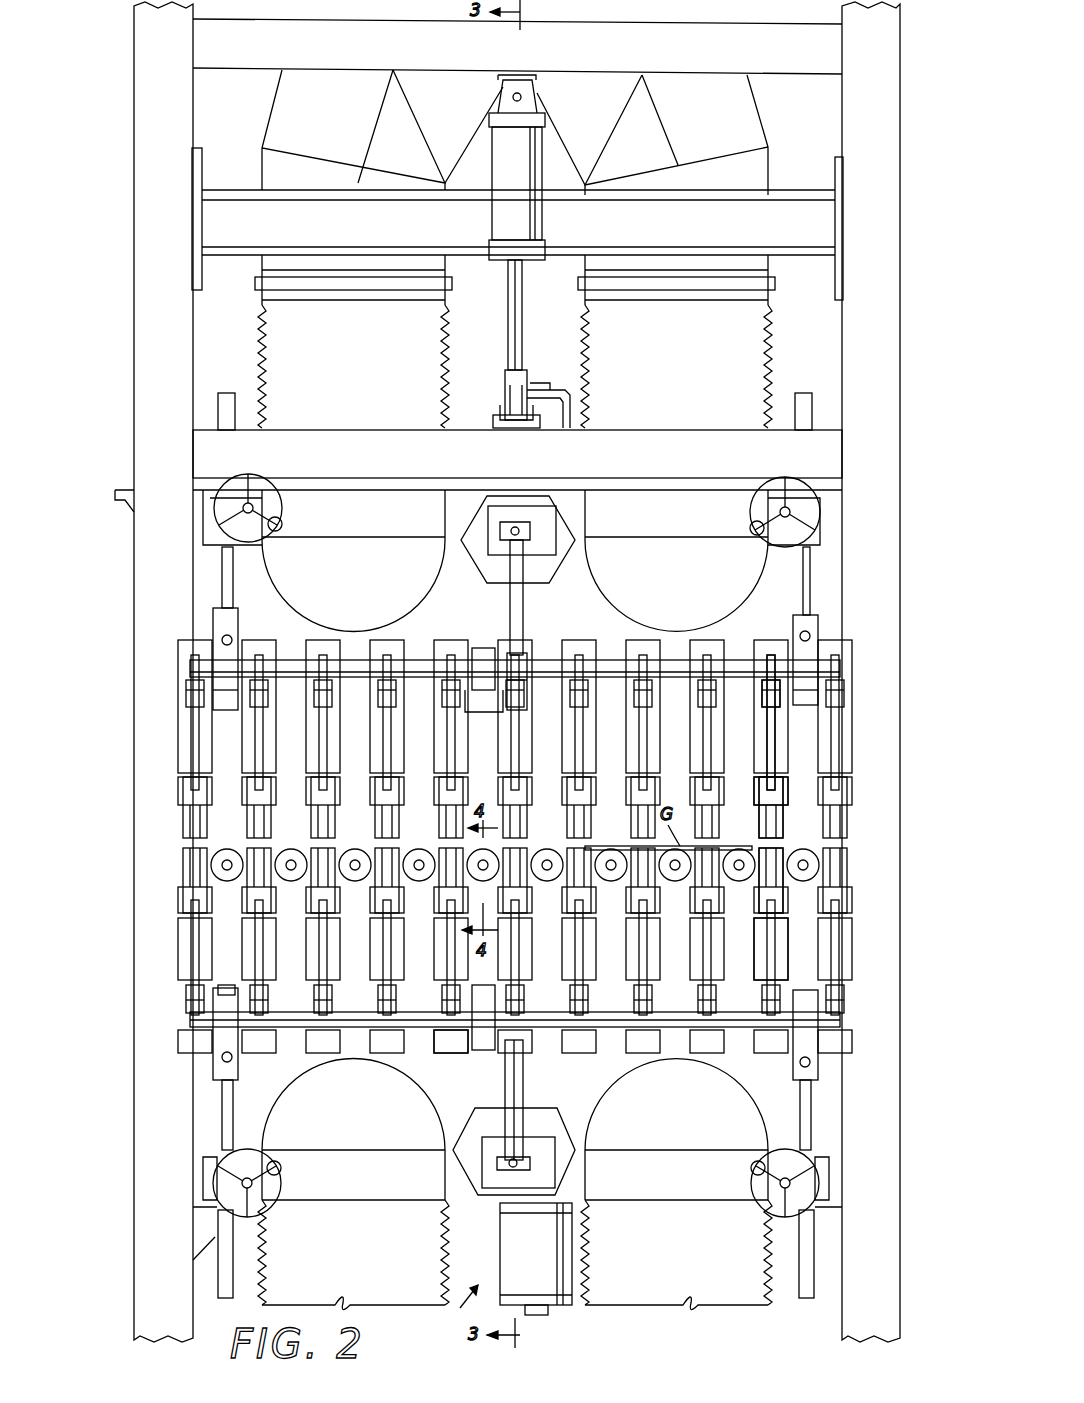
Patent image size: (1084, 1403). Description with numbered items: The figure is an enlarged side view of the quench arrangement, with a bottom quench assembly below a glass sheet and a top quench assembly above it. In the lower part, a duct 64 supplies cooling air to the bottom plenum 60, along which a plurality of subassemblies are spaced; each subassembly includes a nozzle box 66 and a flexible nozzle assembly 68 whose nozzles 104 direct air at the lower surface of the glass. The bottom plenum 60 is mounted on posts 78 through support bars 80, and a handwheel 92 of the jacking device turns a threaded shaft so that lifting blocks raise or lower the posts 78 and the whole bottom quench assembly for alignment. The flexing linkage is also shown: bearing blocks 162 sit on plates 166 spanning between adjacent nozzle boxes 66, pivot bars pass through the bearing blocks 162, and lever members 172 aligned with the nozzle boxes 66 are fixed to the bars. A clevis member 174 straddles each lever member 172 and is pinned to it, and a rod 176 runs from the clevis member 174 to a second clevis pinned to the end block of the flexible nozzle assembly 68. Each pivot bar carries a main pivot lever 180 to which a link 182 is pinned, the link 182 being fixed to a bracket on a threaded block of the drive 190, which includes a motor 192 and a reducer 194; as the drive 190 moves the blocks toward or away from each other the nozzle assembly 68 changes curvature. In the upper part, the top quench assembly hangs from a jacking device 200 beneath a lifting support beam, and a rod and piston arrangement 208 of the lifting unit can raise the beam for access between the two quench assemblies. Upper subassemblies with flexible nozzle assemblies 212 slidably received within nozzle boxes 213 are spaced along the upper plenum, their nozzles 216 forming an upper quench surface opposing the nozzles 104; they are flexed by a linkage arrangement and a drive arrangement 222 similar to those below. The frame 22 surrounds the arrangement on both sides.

The frame 22 is at (940, 84).
The bottom plenum 60 is at (240, 1088).
The duct 64 is at (440, 1220).
The nozzle box 66 is at (798, 930).
The flexible nozzle assembly 68 is at (790, 902).
The post 78 is at (812, 1102).
The support bar 80 is at (820, 1065).
The handwheel 92 is at (220, 1187).
The nozzle 104 is at (785, 880).
The bearing block 162 is at (832, 1020).
The plate 166 is at (800, 982).
The lever member 172 is at (445, 1045).
The clevis member 174 is at (238, 992).
The rod 176 is at (248, 968).
The main pivot lever 180 is at (484, 1045).
The link 182 is at (525, 1075).
The drive 190 is at (457, 1307).
The motor 192 is at (555, 1308).
The reducer 194 is at (578, 1181).
The jacking device 200 is at (768, 482).
The rod and piston arrangement 208 is at (545, 152).
The flexible nozzle assembly 212 is at (795, 785).
The nozzle box 213 is at (800, 735).
The nozzle 216 is at (790, 828).
The drive arrangement 222 is at (538, 385).